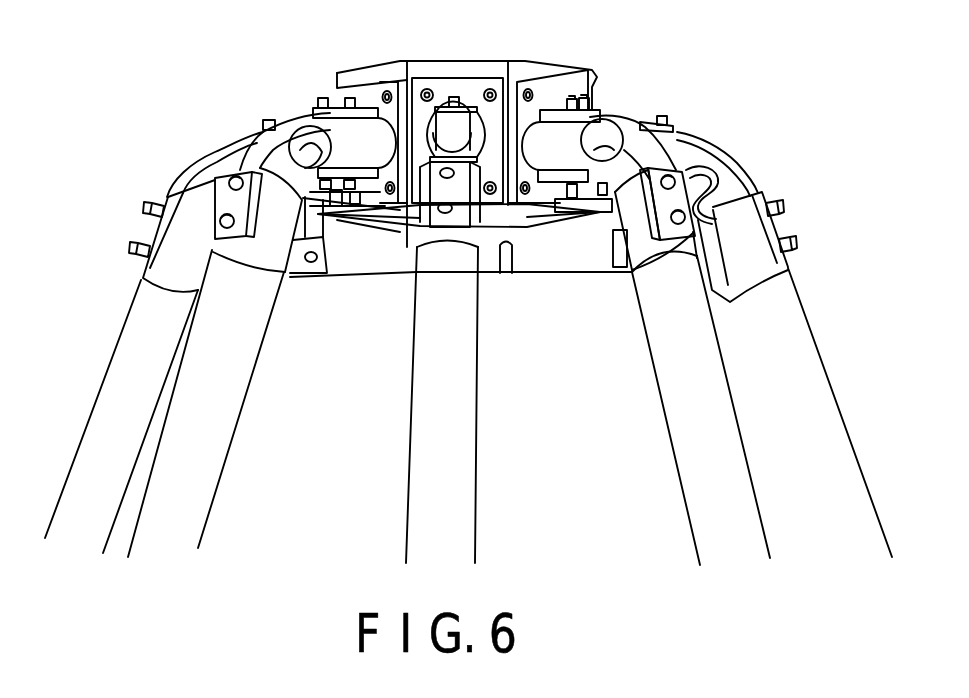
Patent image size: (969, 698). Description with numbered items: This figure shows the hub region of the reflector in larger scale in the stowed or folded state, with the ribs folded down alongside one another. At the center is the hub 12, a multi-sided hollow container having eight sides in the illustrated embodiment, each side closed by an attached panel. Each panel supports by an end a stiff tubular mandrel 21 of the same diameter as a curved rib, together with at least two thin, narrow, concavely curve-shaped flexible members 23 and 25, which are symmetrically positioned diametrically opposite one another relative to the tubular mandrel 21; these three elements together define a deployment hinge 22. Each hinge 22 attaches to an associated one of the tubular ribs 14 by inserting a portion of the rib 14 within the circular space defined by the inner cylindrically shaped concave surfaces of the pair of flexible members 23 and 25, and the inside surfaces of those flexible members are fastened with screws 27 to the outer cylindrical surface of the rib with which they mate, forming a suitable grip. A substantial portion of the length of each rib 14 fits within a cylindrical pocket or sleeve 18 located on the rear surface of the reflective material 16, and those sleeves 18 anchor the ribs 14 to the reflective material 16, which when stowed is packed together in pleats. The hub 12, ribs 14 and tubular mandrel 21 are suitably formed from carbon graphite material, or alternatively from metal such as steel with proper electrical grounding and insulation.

The hub 12 is at (457, 52).
The ribs 14 is at (255, 247).
The reflective material 16 is at (352, 513).
The sleeves 18 is at (222, 415).
The tubular mandrel 21 is at (383, 180).
The deployment hinge 22 is at (307, 86).
The flexible member 23 is at (290, 113).
The flexible member 25 is at (317, 157).
The screws 27 is at (230, 177).